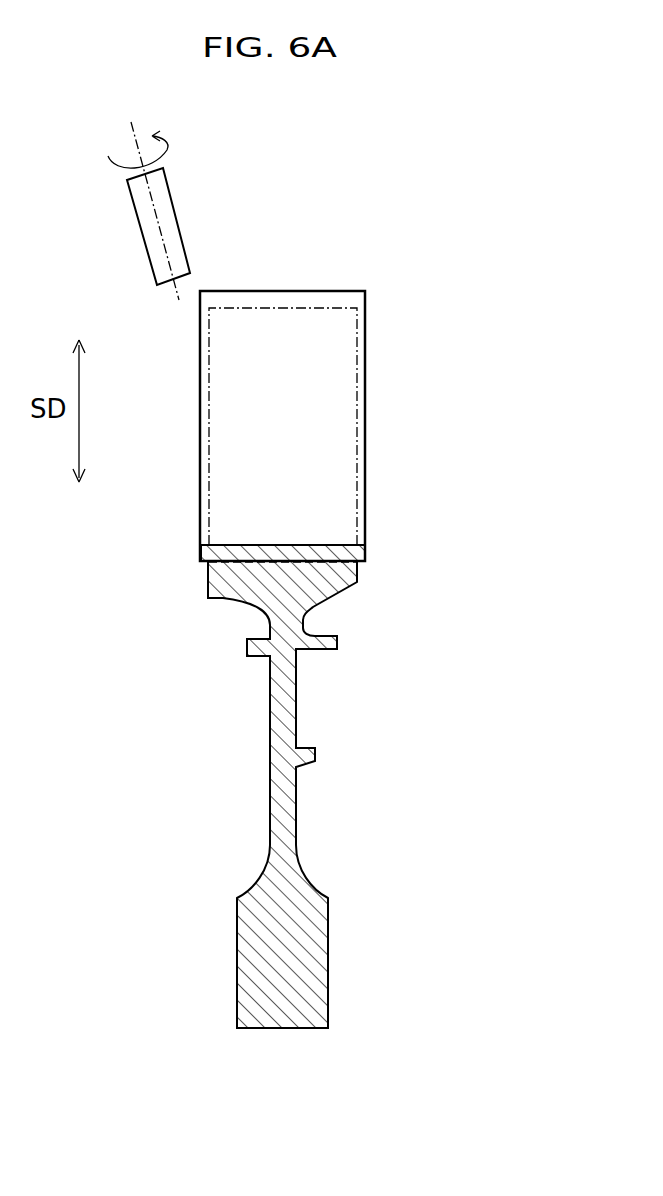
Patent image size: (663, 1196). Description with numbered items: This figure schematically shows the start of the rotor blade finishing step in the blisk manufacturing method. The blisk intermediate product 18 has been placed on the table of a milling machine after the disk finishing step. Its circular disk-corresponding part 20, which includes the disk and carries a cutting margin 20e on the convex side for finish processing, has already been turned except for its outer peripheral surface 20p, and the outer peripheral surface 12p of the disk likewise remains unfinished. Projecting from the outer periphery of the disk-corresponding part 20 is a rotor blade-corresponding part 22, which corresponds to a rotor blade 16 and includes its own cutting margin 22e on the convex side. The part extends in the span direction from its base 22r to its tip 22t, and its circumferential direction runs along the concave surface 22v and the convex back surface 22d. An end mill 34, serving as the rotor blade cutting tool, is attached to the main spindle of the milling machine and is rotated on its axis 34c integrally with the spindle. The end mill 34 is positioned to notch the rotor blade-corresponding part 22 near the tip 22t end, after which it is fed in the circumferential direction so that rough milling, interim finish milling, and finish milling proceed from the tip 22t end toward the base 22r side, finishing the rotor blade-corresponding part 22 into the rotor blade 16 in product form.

The disk-corresponding part 20 is at (272, 726).
The rotor blade-corresponding part 22 is at (200, 397).
The rotor blade 16 is at (358, 426).
The outer peripheral surface 12p is at (243, 538).
The outer peripheral surface 20p is at (282, 545).
The end mill 34 is at (145, 234).
The axis 34c is at (130, 134).
The cutting margin 20e is at (238, 296).
The tip 22t is at (333, 291).
The cutting margin 22e is at (203, 350).
The concave surface 22v is at (312, 350).
The convex back surface 22d is at (306, 482).
The base 22r is at (357, 570).
The blisk intermediate product 18 is at (256, 832).